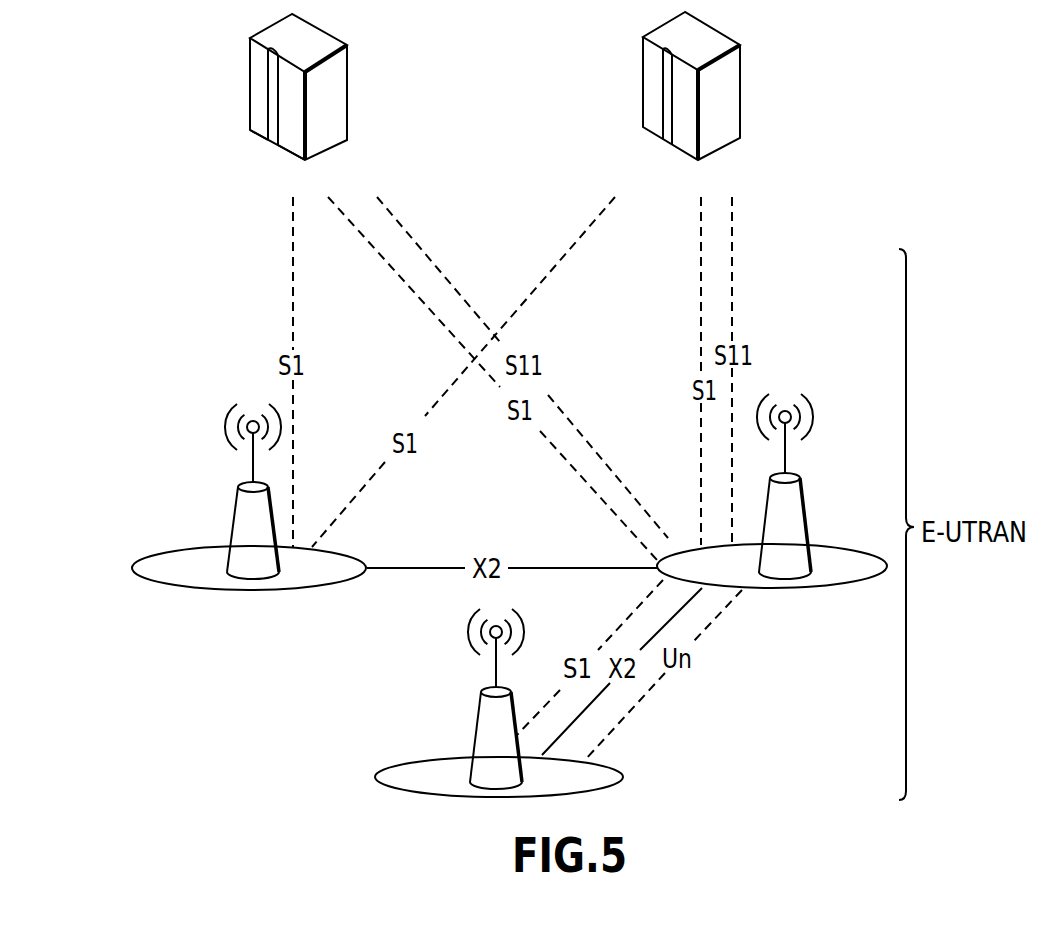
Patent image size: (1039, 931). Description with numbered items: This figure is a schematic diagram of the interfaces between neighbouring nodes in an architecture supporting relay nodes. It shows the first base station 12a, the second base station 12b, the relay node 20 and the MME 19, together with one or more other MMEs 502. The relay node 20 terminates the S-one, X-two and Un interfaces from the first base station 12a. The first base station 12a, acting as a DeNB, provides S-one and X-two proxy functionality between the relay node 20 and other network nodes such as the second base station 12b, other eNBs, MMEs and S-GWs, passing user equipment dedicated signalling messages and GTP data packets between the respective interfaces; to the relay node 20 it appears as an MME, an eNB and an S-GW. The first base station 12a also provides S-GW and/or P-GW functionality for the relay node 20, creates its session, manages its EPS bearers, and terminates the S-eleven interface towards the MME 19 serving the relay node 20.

The other MME 502 is at (348, 88).
The MME 19 is at (740, 88).
The second base station 12b is at (233, 522).
The first base station 12a is at (807, 512).
The relay node 20 is at (476, 730).